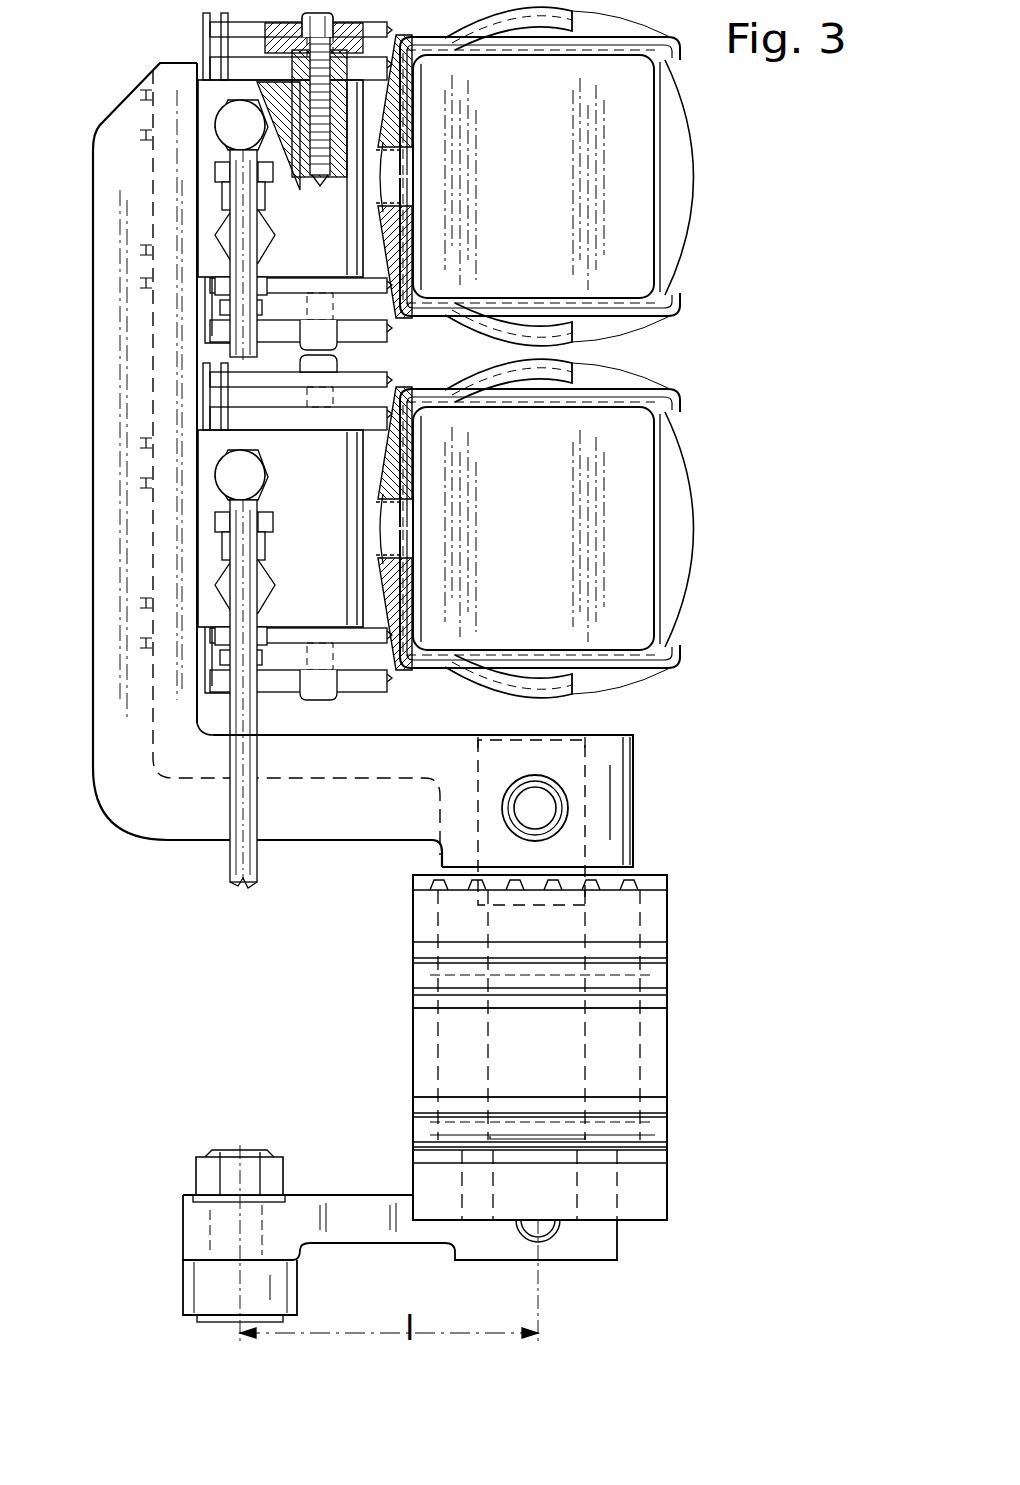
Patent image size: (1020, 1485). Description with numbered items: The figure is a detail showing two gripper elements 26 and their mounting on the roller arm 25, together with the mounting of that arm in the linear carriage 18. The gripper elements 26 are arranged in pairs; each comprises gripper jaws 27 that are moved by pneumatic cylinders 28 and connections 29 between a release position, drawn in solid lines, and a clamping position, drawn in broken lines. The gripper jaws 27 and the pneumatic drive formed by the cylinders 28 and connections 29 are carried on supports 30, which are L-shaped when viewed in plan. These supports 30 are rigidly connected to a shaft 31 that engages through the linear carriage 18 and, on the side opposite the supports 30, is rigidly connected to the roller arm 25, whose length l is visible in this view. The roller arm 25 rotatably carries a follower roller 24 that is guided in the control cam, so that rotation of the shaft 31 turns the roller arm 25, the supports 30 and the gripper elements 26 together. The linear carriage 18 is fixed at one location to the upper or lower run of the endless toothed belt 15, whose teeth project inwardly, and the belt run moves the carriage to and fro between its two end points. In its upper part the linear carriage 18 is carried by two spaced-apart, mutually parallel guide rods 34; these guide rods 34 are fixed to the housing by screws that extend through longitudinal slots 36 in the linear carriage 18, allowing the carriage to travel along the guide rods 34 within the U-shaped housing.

The toothed belt 15 is at (660, 872).
The linear carriage 18 is at (652, 1035).
The follower roller 24 is at (203, 1303).
The roller arm 25 is at (317, 1208).
The gripper element 26 is at (385, 701).
The gripper jaws 27 is at (658, 386).
The pneumatic cylinders 28 is at (287, 227).
The connections 29 is at (217, 328).
The supports 30 is at (122, 777).
The shaft 31 is at (577, 1075).
The guide rods 34 is at (653, 977).
The longitudinal slots 36 is at (653, 942).